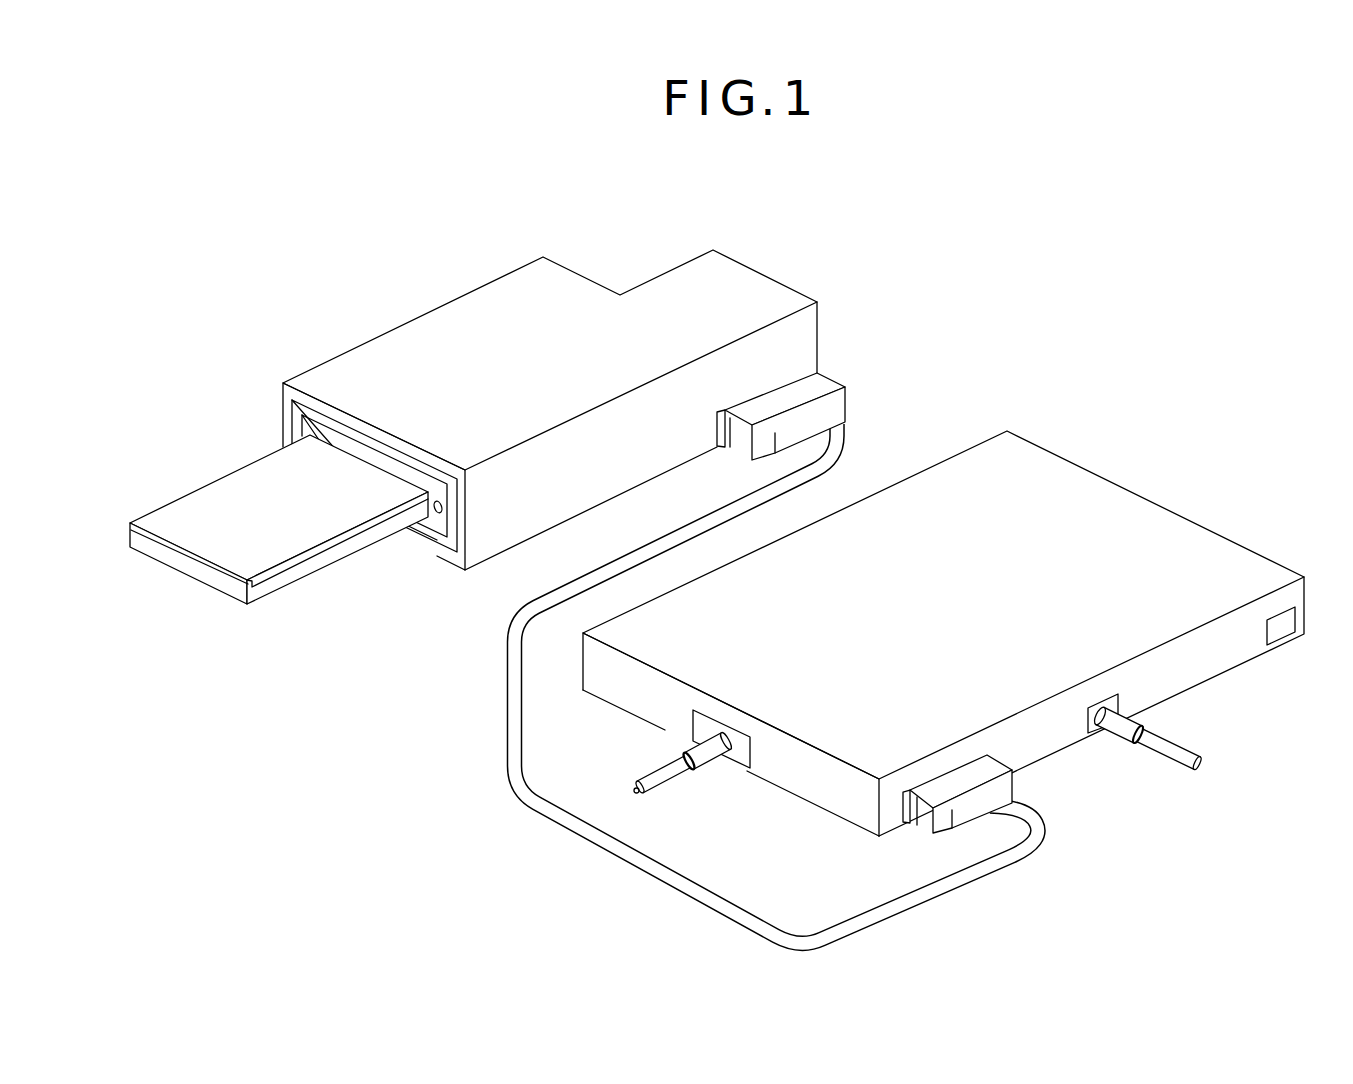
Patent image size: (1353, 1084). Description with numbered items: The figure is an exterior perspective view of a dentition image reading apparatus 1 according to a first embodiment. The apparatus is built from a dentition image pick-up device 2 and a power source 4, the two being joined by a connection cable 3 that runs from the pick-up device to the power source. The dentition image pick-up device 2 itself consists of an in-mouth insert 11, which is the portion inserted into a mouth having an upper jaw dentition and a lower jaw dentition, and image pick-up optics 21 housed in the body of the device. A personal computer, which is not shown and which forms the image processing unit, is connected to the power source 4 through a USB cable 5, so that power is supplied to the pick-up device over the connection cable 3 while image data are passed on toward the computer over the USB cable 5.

The dentition image reading apparatus 1 is at (998, 303).
The dentition image pick-up device 2 is at (295, 288).
The in-mouth insert 11 is at (198, 493).
The image pick-up optics 21 is at (347, 357).
The connection cable 3 is at (505, 700).
The power source 4 is at (1159, 510).
The USB cable 5 is at (1165, 757).